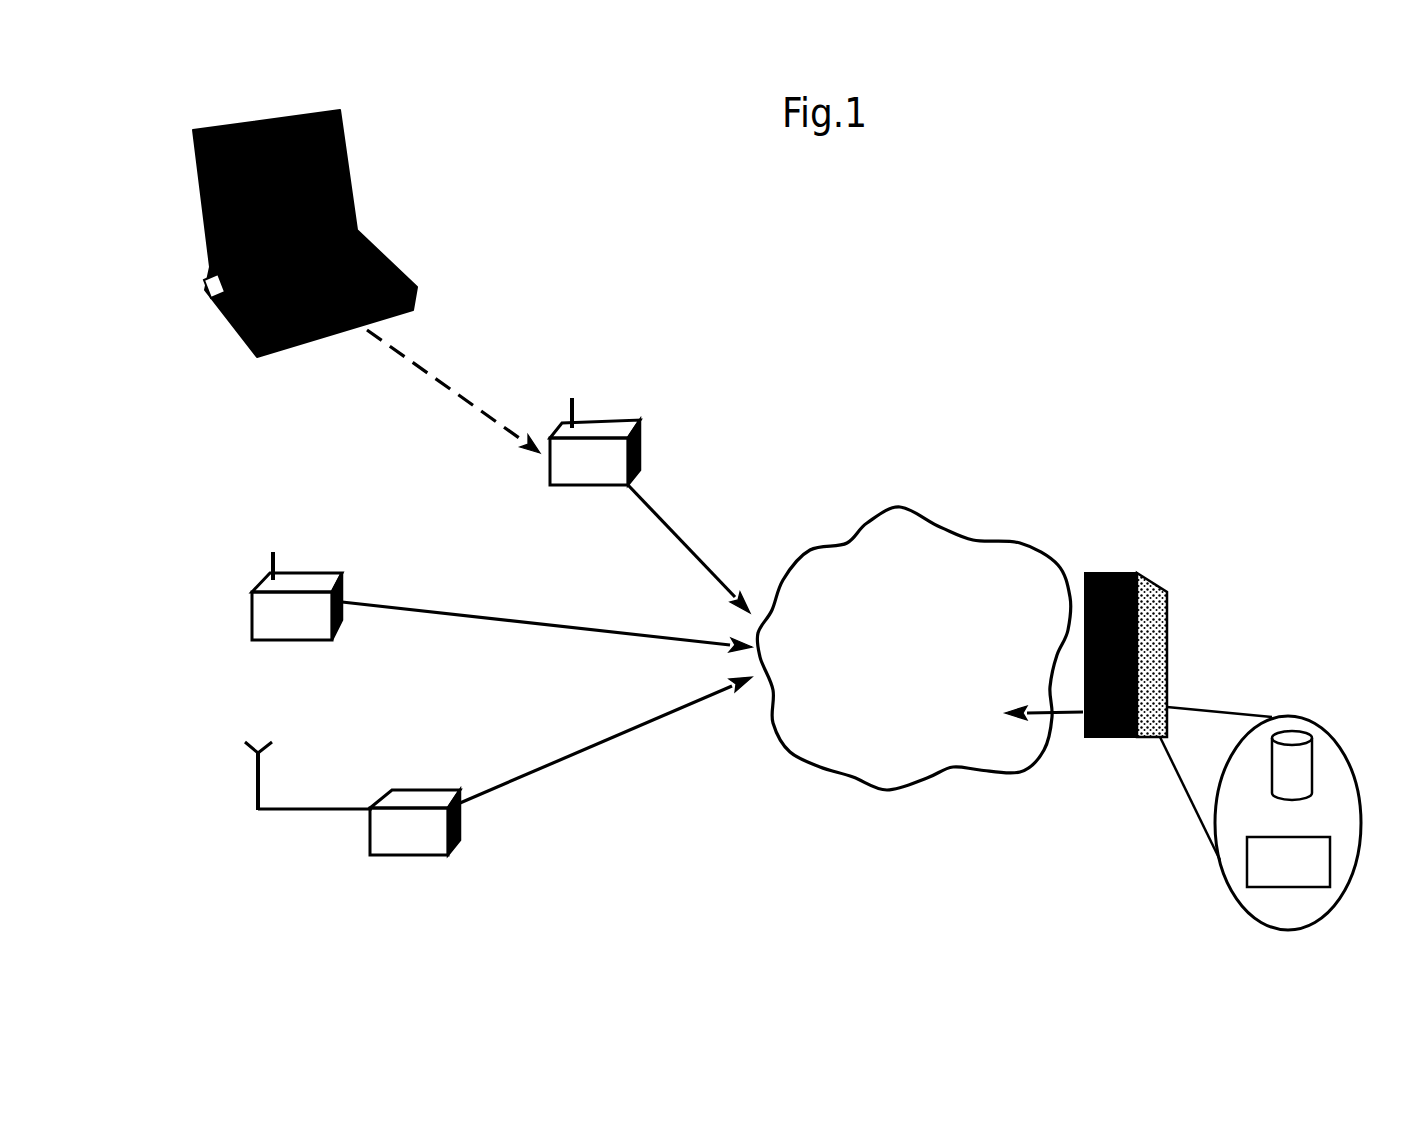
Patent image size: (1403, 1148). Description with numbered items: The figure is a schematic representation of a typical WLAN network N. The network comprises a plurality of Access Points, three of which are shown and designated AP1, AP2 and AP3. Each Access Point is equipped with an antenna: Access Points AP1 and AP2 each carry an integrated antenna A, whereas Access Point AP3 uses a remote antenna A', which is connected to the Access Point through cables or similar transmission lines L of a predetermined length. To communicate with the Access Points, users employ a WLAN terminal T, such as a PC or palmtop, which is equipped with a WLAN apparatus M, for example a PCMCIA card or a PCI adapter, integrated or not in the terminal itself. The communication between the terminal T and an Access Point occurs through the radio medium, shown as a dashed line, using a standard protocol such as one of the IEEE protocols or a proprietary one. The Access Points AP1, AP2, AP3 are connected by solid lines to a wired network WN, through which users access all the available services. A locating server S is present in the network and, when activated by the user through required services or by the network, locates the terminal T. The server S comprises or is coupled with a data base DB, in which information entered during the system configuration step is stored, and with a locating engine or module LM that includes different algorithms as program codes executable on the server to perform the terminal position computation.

The WLAN terminal T is at (377, 223).
The WLAN apparatus M is at (209, 296).
The integrated antenna A is at (412, 441).
The Access Point AP1 is at (612, 423).
The Access Point AP2 is at (327, 583).
The Access Point AP3 is at (418, 798).
The remote antenna A' is at (224, 747).
The transmission line L is at (323, 812).
The WLAN network N is at (903, 425).
The wired network WN is at (993, 557).
The locating server S is at (1157, 683).
The data base DB is at (1303, 762).
The locating module LM is at (1257, 862).